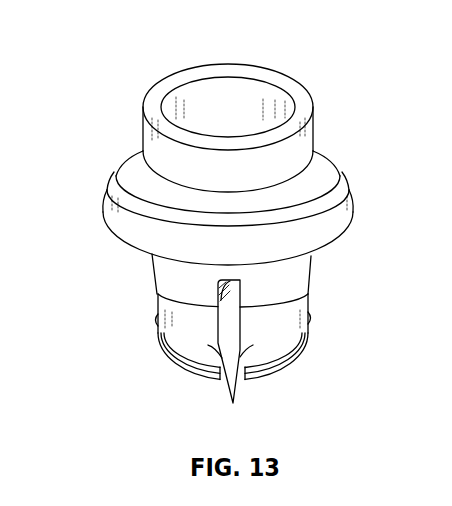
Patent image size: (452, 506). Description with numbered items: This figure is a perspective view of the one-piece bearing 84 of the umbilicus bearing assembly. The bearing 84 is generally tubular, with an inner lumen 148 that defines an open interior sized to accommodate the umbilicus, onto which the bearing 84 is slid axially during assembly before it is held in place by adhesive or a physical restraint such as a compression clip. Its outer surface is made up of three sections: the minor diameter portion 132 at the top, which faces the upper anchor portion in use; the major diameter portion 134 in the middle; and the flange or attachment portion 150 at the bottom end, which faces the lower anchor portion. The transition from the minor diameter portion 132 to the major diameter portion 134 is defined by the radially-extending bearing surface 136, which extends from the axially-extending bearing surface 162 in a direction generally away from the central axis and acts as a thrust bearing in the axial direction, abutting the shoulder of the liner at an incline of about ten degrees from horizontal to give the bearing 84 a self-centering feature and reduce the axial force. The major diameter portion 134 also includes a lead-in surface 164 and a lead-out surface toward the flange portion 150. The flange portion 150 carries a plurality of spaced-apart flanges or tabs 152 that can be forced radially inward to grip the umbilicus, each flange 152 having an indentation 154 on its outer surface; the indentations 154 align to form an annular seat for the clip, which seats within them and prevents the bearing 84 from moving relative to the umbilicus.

The one-piece bearing 84 is at (228, 54).
The minor diameter portion 132 is at (321, 112).
The major diameter portion 134 is at (365, 194).
The radially-extending bearing surface 136 is at (122, 131).
The inner lumen 148 is at (249, 120).
The flange portion 150 is at (148, 305).
The flange 152 is at (283, 287).
The indentation 154 is at (233, 357).
The axially-extending bearing surface 162 is at (249, 182).
The lead-in surface 164 is at (107, 216).